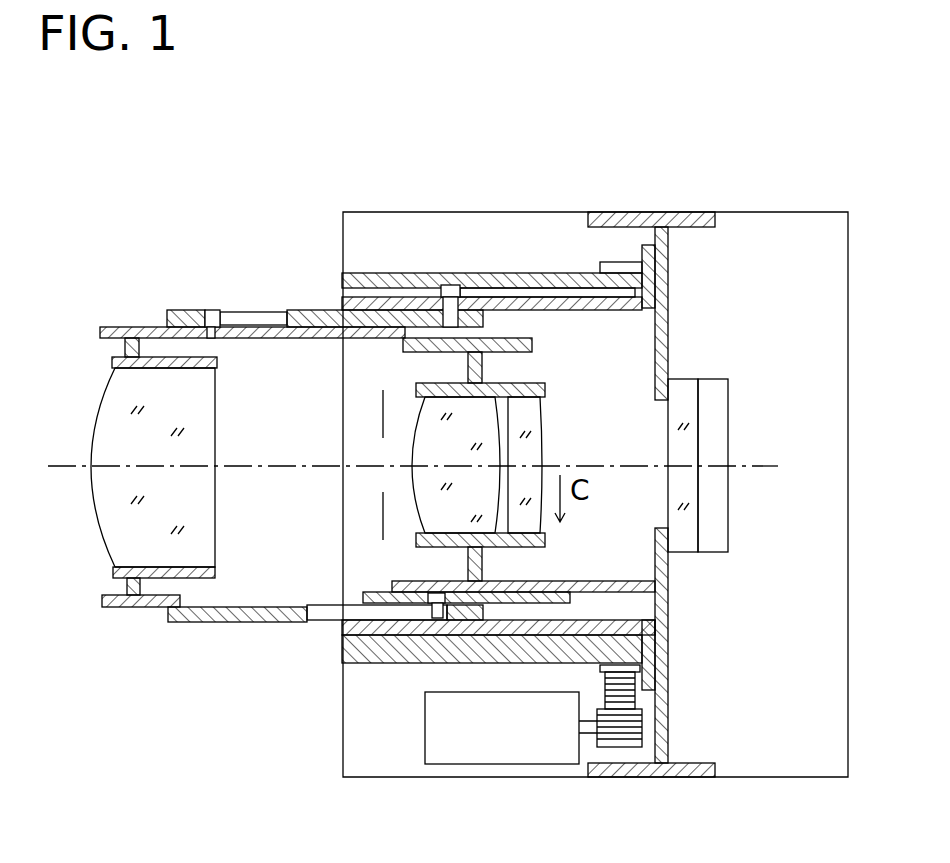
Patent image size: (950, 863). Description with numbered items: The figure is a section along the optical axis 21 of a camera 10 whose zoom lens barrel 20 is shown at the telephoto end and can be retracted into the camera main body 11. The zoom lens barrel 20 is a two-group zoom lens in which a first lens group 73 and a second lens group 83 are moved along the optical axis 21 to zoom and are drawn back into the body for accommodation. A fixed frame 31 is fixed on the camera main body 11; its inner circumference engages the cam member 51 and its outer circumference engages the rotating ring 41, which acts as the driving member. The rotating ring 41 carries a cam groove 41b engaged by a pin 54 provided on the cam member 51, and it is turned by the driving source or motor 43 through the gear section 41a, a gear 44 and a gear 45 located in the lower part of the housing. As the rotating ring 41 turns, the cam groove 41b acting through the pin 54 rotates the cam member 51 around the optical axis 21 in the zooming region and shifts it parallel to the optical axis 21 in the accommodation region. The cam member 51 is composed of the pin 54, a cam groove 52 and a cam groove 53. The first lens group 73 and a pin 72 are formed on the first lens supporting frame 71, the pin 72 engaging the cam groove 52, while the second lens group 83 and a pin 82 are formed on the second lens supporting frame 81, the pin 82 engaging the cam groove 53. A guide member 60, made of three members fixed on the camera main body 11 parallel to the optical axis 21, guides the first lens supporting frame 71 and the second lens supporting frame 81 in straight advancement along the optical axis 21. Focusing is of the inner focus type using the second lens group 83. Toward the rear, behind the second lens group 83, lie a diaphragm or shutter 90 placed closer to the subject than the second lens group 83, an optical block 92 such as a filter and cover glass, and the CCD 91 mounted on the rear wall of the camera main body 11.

The camera 10 is at (698, 167).
The camera main body 11 is at (668, 628).
The zoom lens barrel 20 is at (247, 657).
The optical axis 21 is at (68, 468).
The fixed frame 31 is at (340, 308).
The rotating ring 41 is at (343, 650).
The gear section 41a is at (621, 262).
The cam groove 41b is at (520, 288).
The driving source (motor) 43 is at (480, 755).
The gear 44 is at (622, 748).
The gear 45 is at (630, 700).
The cam member 51 is at (192, 623).
The cam groove 52 is at (258, 313).
The cam groove 53 is at (335, 606).
The pin 54 is at (449, 285).
The guide member 60 is at (598, 581).
The first lens supporting frame 71 is at (100, 604).
The pin 72 is at (210, 311).
The first lens group 73 is at (110, 420).
The second lens supporting frame 81 is at (392, 592).
The pin 82 is at (434, 604).
The second lens group 83 is at (525, 457).
The diaphragm or shutter 90 is at (383, 503).
The CCD 91 is at (739, 388).
The optical block 92 is at (681, 383).